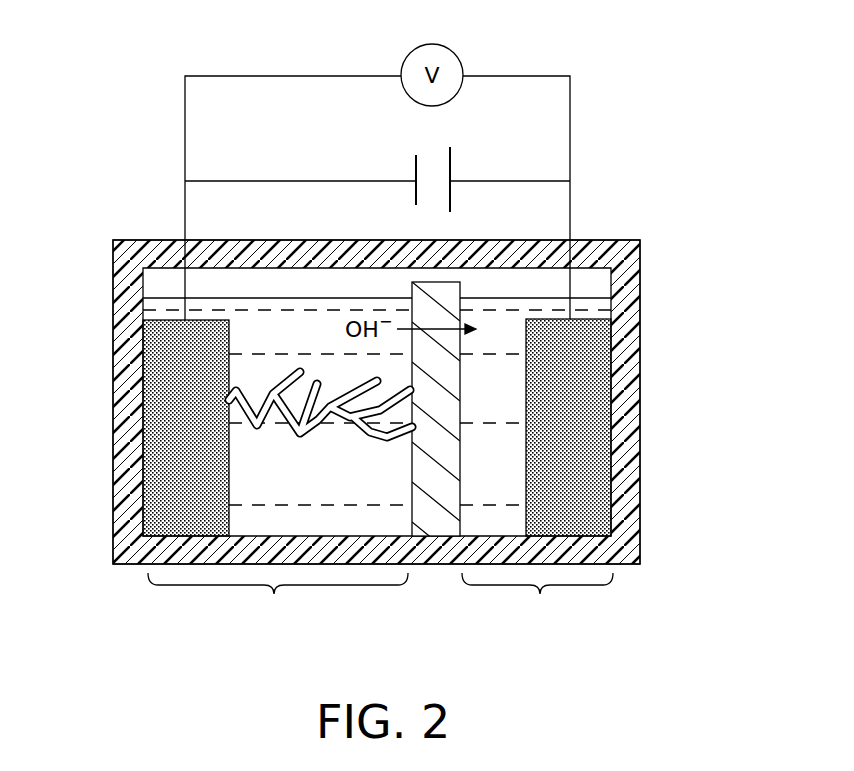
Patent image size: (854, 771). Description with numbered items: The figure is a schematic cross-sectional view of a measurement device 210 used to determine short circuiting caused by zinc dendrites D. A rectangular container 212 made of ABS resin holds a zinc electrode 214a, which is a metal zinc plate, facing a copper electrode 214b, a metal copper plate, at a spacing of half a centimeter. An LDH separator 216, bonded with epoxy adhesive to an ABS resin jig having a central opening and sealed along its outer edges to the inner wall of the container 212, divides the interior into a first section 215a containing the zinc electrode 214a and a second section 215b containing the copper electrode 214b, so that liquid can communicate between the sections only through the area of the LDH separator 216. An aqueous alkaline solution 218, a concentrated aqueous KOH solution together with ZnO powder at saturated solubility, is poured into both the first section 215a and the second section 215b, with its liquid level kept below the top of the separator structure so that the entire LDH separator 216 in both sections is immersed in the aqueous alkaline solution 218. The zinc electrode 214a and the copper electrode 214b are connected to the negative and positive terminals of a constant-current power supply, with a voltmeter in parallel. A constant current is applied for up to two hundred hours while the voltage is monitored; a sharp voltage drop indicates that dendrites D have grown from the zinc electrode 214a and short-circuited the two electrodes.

The measurement device 210 is at (628, 53).
The container 212 is at (625, 300).
The zinc electrode 214a is at (178, 462).
The copper electrode 214b is at (570, 445).
The first section 215a is at (278, 603).
The second section 215b is at (537, 600).
The LDH separator 216 is at (439, 517).
The aqueous alkaline solution 218 is at (247, 336).
The dendrites D is at (283, 377).